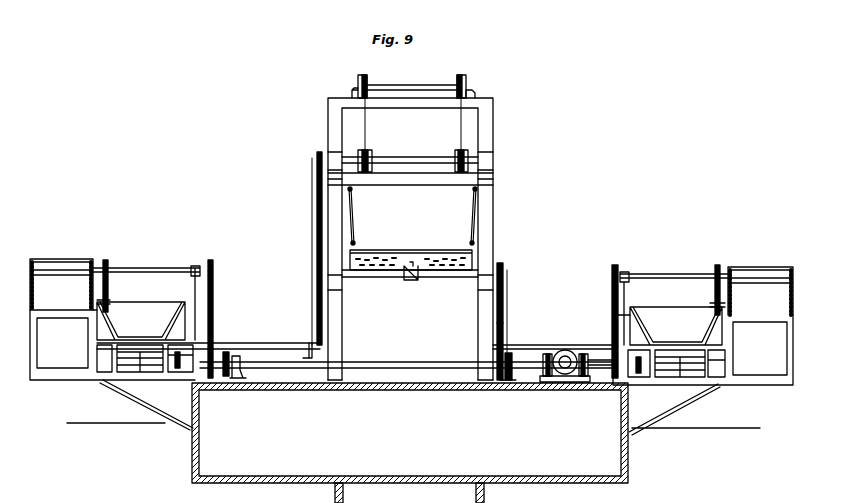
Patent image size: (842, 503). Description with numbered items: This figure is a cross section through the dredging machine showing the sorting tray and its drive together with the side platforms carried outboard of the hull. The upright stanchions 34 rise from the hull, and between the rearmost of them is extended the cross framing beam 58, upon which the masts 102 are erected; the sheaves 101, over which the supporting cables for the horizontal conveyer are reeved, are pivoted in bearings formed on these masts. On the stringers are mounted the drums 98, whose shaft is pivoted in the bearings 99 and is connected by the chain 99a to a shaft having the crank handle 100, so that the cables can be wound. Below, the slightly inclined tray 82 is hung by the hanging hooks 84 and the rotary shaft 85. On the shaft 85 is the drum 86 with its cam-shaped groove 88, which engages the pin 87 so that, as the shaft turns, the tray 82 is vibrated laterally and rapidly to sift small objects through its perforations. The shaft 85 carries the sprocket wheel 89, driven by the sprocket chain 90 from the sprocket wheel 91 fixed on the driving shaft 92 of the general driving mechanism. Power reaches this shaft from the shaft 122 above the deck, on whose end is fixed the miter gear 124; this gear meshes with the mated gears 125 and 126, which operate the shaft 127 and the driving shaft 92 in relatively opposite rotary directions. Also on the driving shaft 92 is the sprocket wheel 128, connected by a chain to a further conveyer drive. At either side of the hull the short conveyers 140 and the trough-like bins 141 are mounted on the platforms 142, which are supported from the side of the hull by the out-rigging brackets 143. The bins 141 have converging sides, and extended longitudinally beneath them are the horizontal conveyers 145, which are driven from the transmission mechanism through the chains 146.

The vertical stanchions 34 is at (342, 328).
The cross framing beam 58 is at (497, 178).
The tray 82 is at (381, 255).
The hanging hooks 84 is at (352, 210).
The rotary shaft 85 is at (465, 278).
The drum 86 is at (417, 279).
The pin 87 is at (414, 263).
The cam-shaped groove 88 is at (407, 281).
The sprocket wheel 89 is at (503, 269).
The sprocket chain 90 is at (504, 324).
The sprocket wheel 91 is at (492, 385).
The driving shaft 92 is at (283, 363).
The drums 98 is at (368, 151).
The bearings 99 is at (346, 161).
The chain 99a is at (317, 232).
The crank handle 100 is at (309, 345).
The sheaves 101 is at (367, 80).
The masts 102 is at (496, 101).
The shaft 122 is at (565, 383).
The miter gear 124 is at (570, 354).
The mated gear 125 is at (551, 354).
The mated gear 126 is at (586, 383).
The shaft 127 is at (601, 358).
The sprocket wheel 128 is at (511, 382).
The short conveyers 140 is at (66, 283).
The trough-like bins 141 is at (146, 306).
The platforms 142 is at (70, 380).
The out-rigging brackets 143 is at (160, 417).
The horizontal conveyers 145 is at (140, 362).
The chains 146 is at (108, 277).